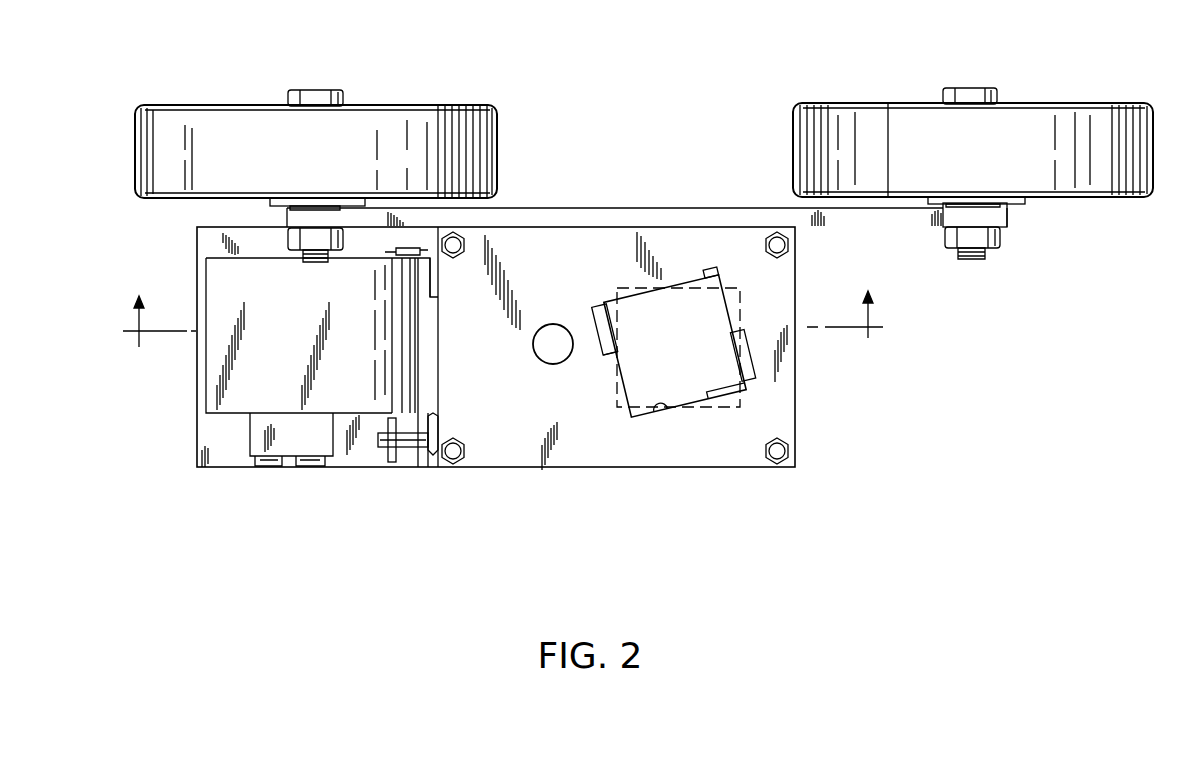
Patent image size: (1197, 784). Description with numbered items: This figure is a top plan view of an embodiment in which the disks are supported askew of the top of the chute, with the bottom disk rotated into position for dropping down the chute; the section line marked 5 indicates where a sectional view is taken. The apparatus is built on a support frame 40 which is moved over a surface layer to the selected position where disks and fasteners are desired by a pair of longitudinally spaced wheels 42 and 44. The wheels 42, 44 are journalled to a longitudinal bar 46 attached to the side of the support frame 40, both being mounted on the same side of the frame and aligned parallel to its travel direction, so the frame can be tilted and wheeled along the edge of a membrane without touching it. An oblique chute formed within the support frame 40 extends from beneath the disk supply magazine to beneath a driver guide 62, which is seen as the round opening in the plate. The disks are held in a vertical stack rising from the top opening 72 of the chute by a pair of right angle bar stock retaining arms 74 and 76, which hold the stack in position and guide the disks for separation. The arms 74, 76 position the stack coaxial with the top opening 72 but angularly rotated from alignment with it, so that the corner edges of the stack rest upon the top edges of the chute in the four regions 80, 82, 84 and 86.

The support frame 40 is at (795, 366).
The wheel 42 is at (1013, 117).
The wheel 44 is at (380, 117).
The longitudinal bar 46 is at (665, 225).
The driver guide 62 is at (543, 365).
The top opening of the chute 72 is at (738, 297).
The retaining arm 74 is at (758, 382).
The retaining arm 76 is at (597, 323).
The region 80 is at (716, 273).
The region 82 is at (740, 405).
The region 84 is at (645, 408).
The region 86 is at (612, 302).
The section line 5- 5 is at (503, 307).